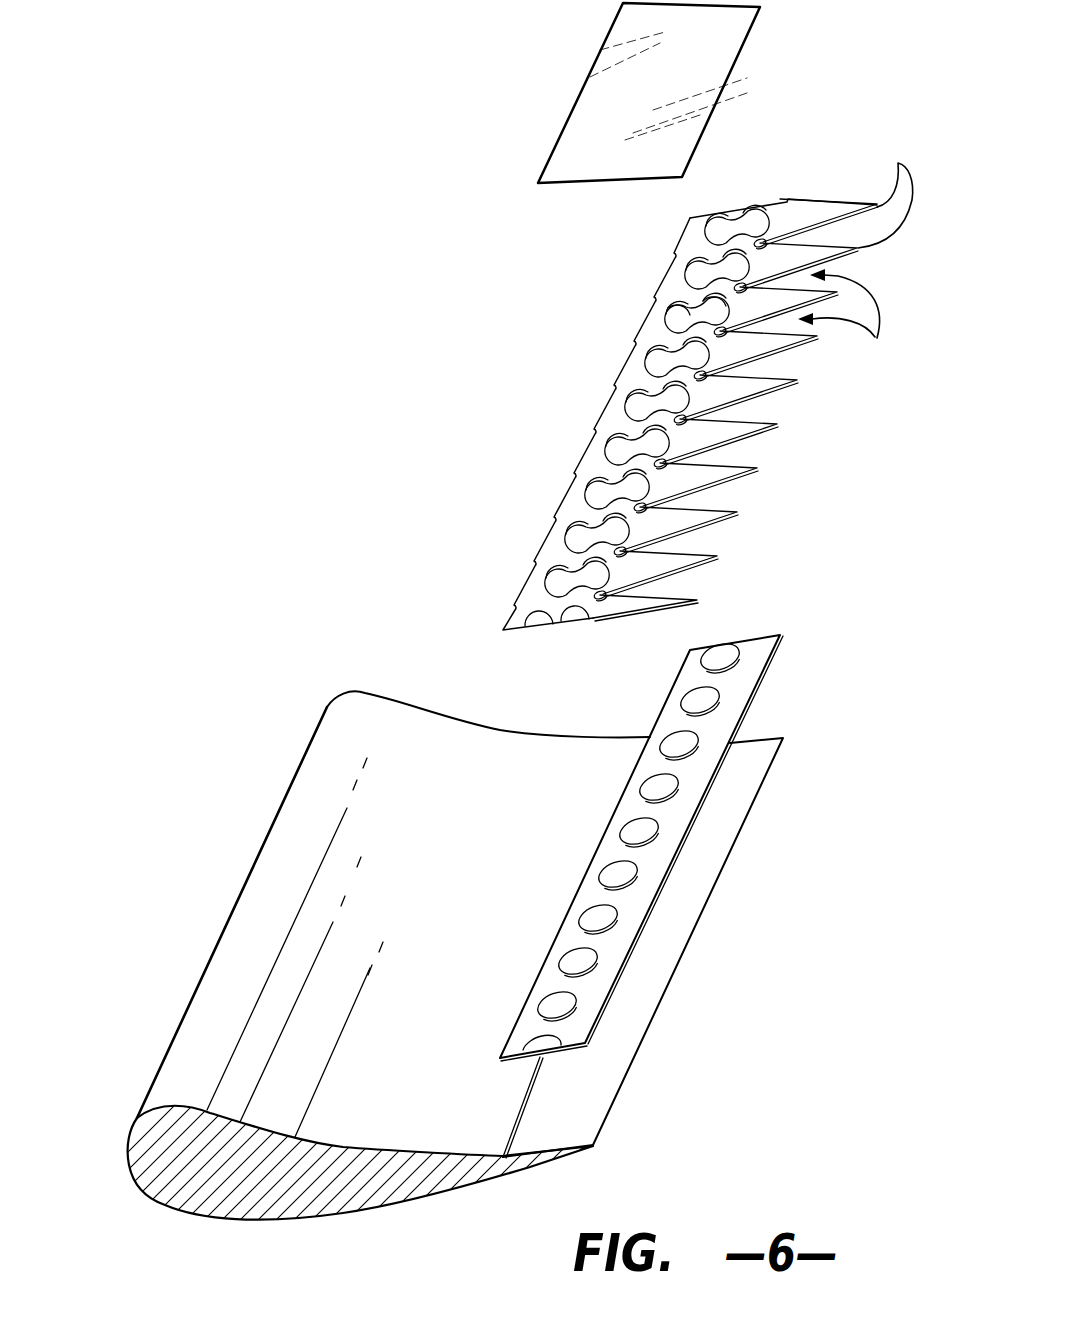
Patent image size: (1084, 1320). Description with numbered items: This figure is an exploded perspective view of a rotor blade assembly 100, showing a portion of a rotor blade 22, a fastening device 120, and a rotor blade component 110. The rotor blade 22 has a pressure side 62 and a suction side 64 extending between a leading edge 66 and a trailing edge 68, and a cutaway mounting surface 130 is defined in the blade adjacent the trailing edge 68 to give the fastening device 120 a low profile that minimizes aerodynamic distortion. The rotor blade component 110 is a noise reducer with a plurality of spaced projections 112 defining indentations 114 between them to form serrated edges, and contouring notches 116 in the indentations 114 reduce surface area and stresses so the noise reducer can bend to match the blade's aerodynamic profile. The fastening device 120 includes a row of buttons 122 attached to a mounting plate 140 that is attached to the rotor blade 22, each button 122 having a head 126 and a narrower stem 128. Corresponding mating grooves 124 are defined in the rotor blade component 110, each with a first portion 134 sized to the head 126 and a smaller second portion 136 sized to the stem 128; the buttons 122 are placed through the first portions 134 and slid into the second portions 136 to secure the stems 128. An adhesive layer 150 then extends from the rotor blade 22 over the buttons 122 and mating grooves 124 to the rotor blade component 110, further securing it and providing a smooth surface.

The rotor blade 22 is at (202, 835).
The pressure side 62 is at (392, 798).
The suction side 64 is at (210, 1213).
The leading edge 66 is at (178, 1025).
The trailing edge 68 is at (703, 905).
The rotor blade assembly 100 is at (345, 280).
The rotor blade component 110 is at (548, 430).
The projections 112 is at (885, 188).
The indentations 114 is at (850, 323).
The contouring notches 116 is at (641, 505).
The fastening device 120 is at (722, 600).
The button 122 is at (723, 641).
The mating groove 124 is at (655, 329).
The head 126 is at (553, 1033).
The stem 128 is at (547, 1073).
The cutaway mounting surface 130 is at (658, 967).
The first portion 134 is at (705, 308).
The second portion 136 is at (681, 313).
The mounting plate 140 is at (583, 1055).
The adhesive layer 150 is at (718, 40).